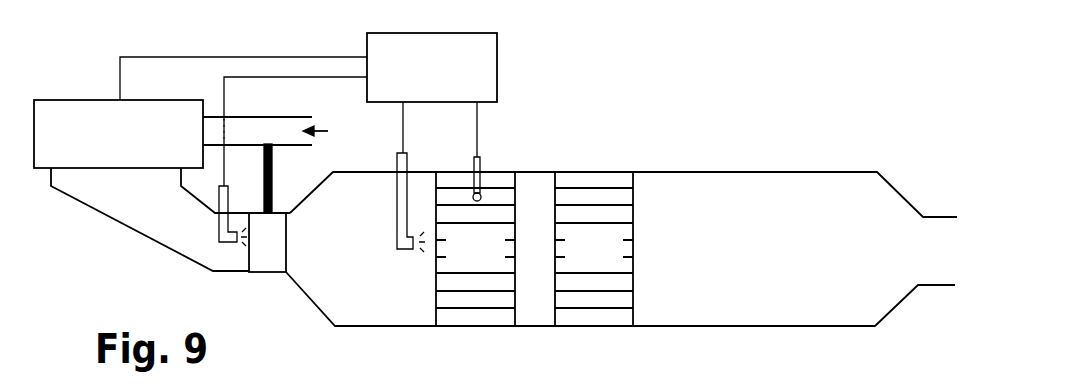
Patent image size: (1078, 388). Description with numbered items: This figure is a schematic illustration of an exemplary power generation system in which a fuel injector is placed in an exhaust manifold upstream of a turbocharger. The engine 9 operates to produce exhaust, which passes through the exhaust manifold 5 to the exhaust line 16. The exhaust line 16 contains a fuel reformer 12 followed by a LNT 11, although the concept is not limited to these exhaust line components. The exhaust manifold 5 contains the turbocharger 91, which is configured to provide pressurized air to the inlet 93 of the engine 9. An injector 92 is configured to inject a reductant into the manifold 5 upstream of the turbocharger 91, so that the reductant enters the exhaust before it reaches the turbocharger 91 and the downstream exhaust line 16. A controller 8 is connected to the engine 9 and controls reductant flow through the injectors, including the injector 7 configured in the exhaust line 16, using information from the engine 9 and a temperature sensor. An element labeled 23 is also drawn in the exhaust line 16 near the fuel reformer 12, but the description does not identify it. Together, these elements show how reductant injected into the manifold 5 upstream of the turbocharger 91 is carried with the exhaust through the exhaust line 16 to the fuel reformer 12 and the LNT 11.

The engine 9 is at (106, 112).
The controller 8 is at (473, 48).
The inlet 93 is at (278, 128).
The injector 92 is at (224, 202).
The turbocharger 91 is at (268, 262).
The exhaust manifold 5 is at (180, 243).
The exhaust line 16 is at (335, 305).
The second injector 7 is at (405, 153).
The fuel injector 23 is at (480, 160).
The fuel reformer 12 is at (493, 180).
The LNT 11 is at (607, 180).